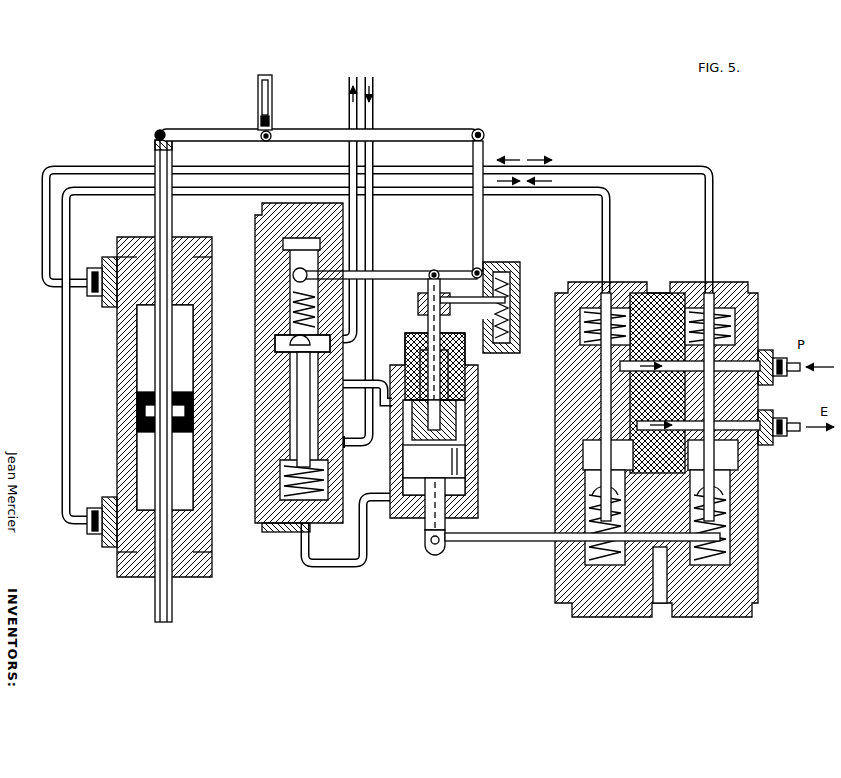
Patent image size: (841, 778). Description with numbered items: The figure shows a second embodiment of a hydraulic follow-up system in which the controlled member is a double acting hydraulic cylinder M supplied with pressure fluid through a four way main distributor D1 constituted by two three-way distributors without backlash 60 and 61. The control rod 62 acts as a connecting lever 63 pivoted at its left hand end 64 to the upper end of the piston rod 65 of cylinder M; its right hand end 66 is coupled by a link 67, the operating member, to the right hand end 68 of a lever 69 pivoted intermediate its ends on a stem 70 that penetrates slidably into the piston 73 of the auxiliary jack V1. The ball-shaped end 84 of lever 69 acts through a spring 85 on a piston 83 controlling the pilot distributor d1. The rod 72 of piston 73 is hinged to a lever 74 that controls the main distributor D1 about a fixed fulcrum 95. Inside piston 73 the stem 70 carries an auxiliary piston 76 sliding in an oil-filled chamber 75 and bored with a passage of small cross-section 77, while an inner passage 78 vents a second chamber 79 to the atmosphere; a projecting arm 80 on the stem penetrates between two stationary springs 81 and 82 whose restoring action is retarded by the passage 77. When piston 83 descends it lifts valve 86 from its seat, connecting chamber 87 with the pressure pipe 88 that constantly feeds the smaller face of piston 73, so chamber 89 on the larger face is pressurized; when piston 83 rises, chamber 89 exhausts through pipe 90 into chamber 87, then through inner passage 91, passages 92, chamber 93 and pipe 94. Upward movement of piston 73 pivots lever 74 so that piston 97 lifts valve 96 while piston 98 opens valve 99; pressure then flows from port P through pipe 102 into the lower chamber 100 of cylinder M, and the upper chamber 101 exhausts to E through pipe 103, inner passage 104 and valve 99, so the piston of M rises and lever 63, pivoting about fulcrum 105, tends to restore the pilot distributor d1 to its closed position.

The three-way distributor without backlash 60 is at (760, 450).
The three-way distributor without backlash 61 is at (573, 426).
The control rod 62 is at (272, 88).
The connecting lever 63 is at (426, 131).
The pivot 64 is at (160, 130).
The piston rod 65 is at (173, 213).
The right hand end of connecting rod 66 is at (483, 133).
The link 67 is at (483, 236).
The right hand end of lever 68 is at (472, 270).
The lever 69 is at (405, 271).
The stem 70 is at (428, 318).
The rod of piston 72 is at (445, 491).
The piston of auxiliary jack 73 is at (465, 460).
The lever 74 is at (483, 542).
The cylindrical oil-filled chamber 75 is at (410, 356).
The auxiliary piston 76 is at (449, 370).
The passage of small cross-section 77 is at (478, 373).
The inner passage 78 is at (418, 300).
The second chamber 79 is at (457, 420).
The projecting arm 80 is at (470, 304).
The stationary spring 81 is at (520, 275).
The stationary spring 82 is at (512, 310).
The piston 83 is at (292, 338).
The ball-shaped end of lever 84 is at (292, 275).
The spring 85 is at (292, 312).
The valve 86 is at (330, 476).
The chamber 87 is at (276, 532).
The pressure pipe 88 is at (375, 217).
The chamber 89 is at (447, 486).
The pipe 90 is at (335, 565).
The inner passage 91 is at (288, 440).
The passages 92 is at (336, 386).
The chamber 93 is at (330, 346).
The pipe 94 is at (349, 150).
The fixed fulcrum 95 is at (660, 604).
The valve of main distributor 96 is at (558, 377).
The piston 97 is at (556, 489).
The piston 98 is at (760, 510).
The valve 99 is at (760, 480).
The lower chamber 100 is at (140, 462).
The upper chamber 101 is at (127, 368).
The pipe 102 is at (612, 238).
The pipe 103 is at (684, 168).
The inner passage 104 is at (770, 394).
The fulcrum 105 is at (270, 133).
The double acting hydraulic cylinder M is at (212, 384).
The four way main distributor D1 is at (666, 292).
The pilot distributor d1 is at (300, 412).
The auxiliary jack V1 is at (390, 457).